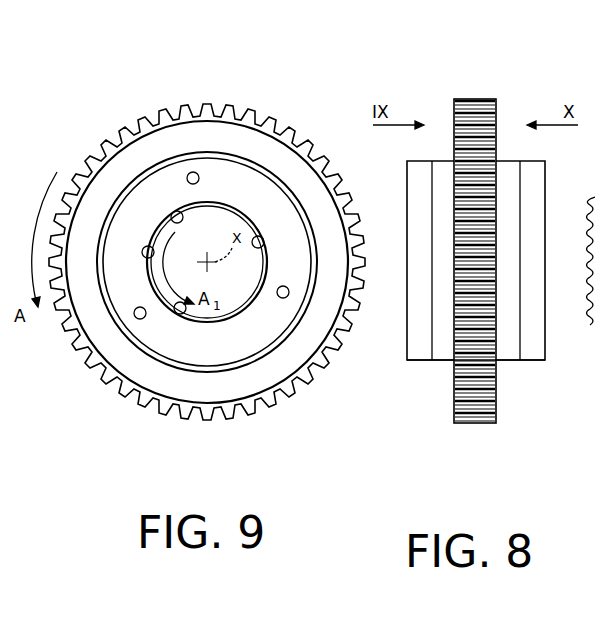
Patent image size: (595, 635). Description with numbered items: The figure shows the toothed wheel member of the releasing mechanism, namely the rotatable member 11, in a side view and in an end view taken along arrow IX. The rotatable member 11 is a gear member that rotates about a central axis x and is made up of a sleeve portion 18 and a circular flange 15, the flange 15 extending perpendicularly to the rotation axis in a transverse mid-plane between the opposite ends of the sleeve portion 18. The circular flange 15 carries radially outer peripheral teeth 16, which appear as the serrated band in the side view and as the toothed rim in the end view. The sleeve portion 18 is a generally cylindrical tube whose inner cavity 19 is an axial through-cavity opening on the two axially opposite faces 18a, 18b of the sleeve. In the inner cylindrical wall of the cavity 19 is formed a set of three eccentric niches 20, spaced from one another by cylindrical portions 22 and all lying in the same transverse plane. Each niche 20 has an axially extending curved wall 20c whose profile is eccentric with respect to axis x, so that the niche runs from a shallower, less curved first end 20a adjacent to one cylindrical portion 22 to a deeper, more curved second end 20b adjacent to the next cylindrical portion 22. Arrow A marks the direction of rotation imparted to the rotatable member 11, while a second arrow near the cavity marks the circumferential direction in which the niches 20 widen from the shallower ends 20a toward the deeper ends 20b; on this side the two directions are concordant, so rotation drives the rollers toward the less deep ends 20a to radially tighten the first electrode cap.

In FIG. 9, the rotatable member 11 is at (102, 122).
In FIG. 8, the rotatable member 11 is at (436, 103).
In FIG. 9, the circular flange 15 is at (204, 141).
In FIG. 9, the radially outer peripheral teeth 16 is at (163, 100).
In FIG. 8, the radially outer peripheral teeth 16 is at (478, 98).
In FIG. 8, the sleeve portion 18 is at (432, 360).
In FIG. 9, the axially opposite face 18a is at (187, 322).
In FIG. 8, the axially opposite face 18a is at (403, 347).
In FIG. 8, the axially opposite face 18b is at (550, 338).
In FIG. 9, the inner cavity 19 is at (207, 213).
In FIG. 9, the eccentric niches 20 is at (233, 223).
In FIG. 9, the first end 20a is at (205, 322).
In FIG. 9, the second end 20b is at (243, 308).
In FIG. 9, the curved wall 20c is at (165, 225).
In FIG. 9, the cylindrical portions 22 is at (172, 215).